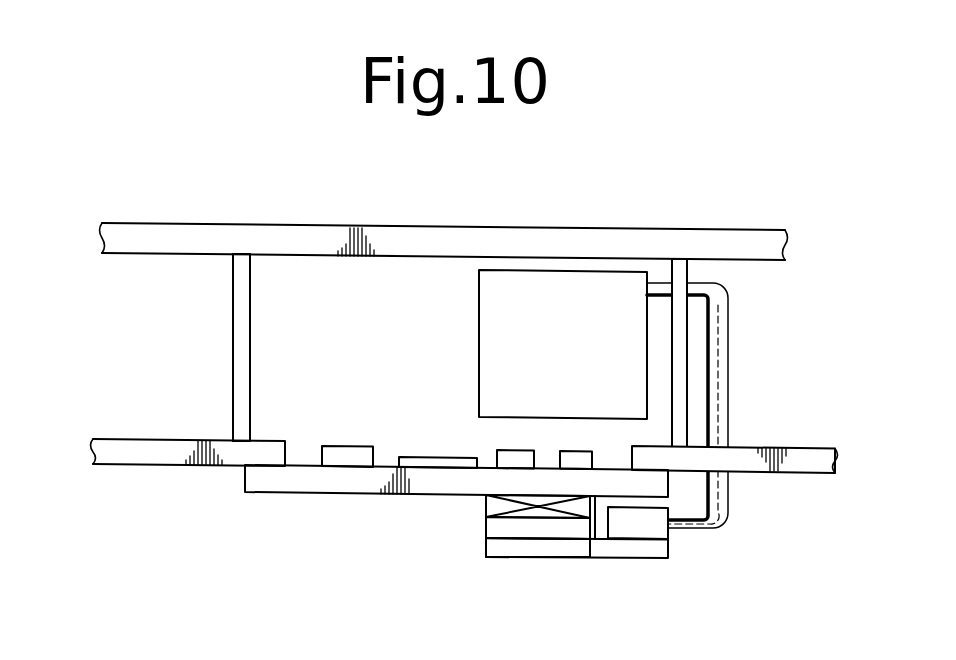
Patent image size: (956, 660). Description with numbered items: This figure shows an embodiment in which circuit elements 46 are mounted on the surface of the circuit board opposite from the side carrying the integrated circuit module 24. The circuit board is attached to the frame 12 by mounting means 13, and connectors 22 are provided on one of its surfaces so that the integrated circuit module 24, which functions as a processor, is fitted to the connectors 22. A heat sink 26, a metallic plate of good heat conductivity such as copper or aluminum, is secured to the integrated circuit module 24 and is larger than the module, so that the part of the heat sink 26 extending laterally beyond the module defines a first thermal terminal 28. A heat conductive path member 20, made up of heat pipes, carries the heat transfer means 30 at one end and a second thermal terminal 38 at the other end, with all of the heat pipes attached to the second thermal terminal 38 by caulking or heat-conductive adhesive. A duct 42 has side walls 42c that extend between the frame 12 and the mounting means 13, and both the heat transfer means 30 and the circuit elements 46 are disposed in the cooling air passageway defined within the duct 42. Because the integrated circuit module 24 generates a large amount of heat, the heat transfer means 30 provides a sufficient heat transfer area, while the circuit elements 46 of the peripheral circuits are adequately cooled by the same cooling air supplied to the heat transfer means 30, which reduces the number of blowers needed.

The frame 12 is at (443, 240).
The mounting means 13 is at (133, 455).
The heat conductive path member 20 is at (715, 362).
The connectors 22 is at (487, 507).
The integrated circuit module 24 is at (487, 530).
The heat sink 26 is at (530, 548).
The first thermal terminal 28 is at (630, 550).
The heat transfer means 30 is at (573, 297).
The second thermal terminal 38 is at (653, 530).
The duct 42 is at (250, 330).
The side walls 42c is at (237, 292).
The circuit elements 46 is at (570, 455).